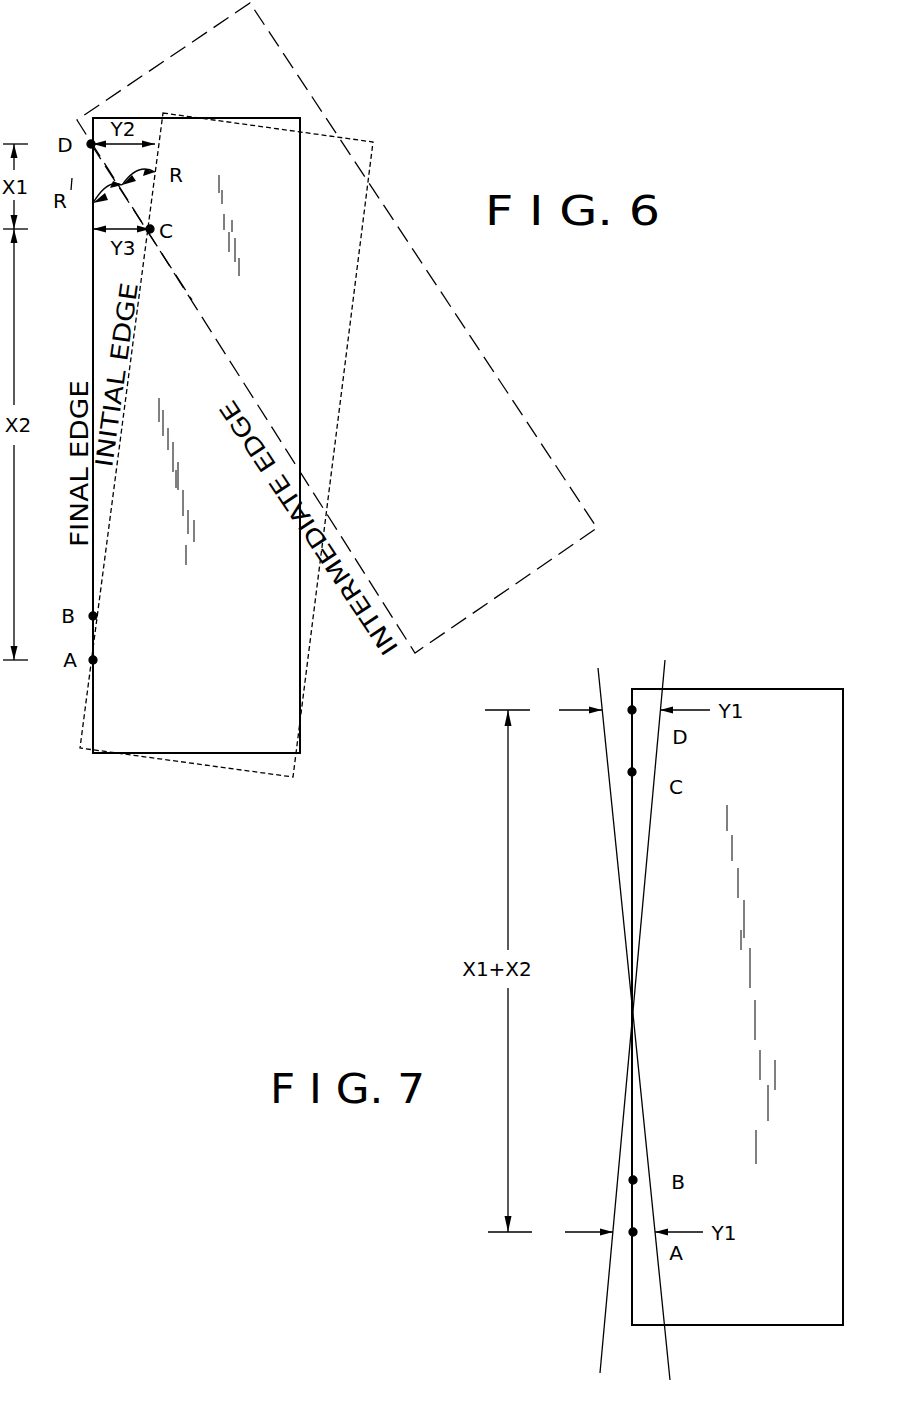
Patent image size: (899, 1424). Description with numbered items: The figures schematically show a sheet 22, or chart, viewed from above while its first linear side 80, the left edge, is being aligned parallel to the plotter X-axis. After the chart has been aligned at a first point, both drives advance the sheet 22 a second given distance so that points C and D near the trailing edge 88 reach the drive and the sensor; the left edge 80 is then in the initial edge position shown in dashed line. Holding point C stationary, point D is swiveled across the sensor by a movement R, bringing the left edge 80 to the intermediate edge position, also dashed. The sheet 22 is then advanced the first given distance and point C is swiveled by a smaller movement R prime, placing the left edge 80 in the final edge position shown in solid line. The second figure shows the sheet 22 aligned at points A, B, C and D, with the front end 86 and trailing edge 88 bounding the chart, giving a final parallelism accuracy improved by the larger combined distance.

In FIG. 6, the sheet 22 is at (215, 656).
In FIG. 7, the sheet 22 is at (719, 1059).
In FIG. 6, the first linear side 80 is at (92, 323).
In FIG. 7, the first linear side 80 is at (632, 702).
In FIG. 6, the front end 86 is at (257, 754).
In FIG. 7, the front end 86 is at (792, 1327).
In FIG. 6, the trailing edge 88 is at (262, 118).
In FIG. 7, the trailing edge 88 is at (768, 689).